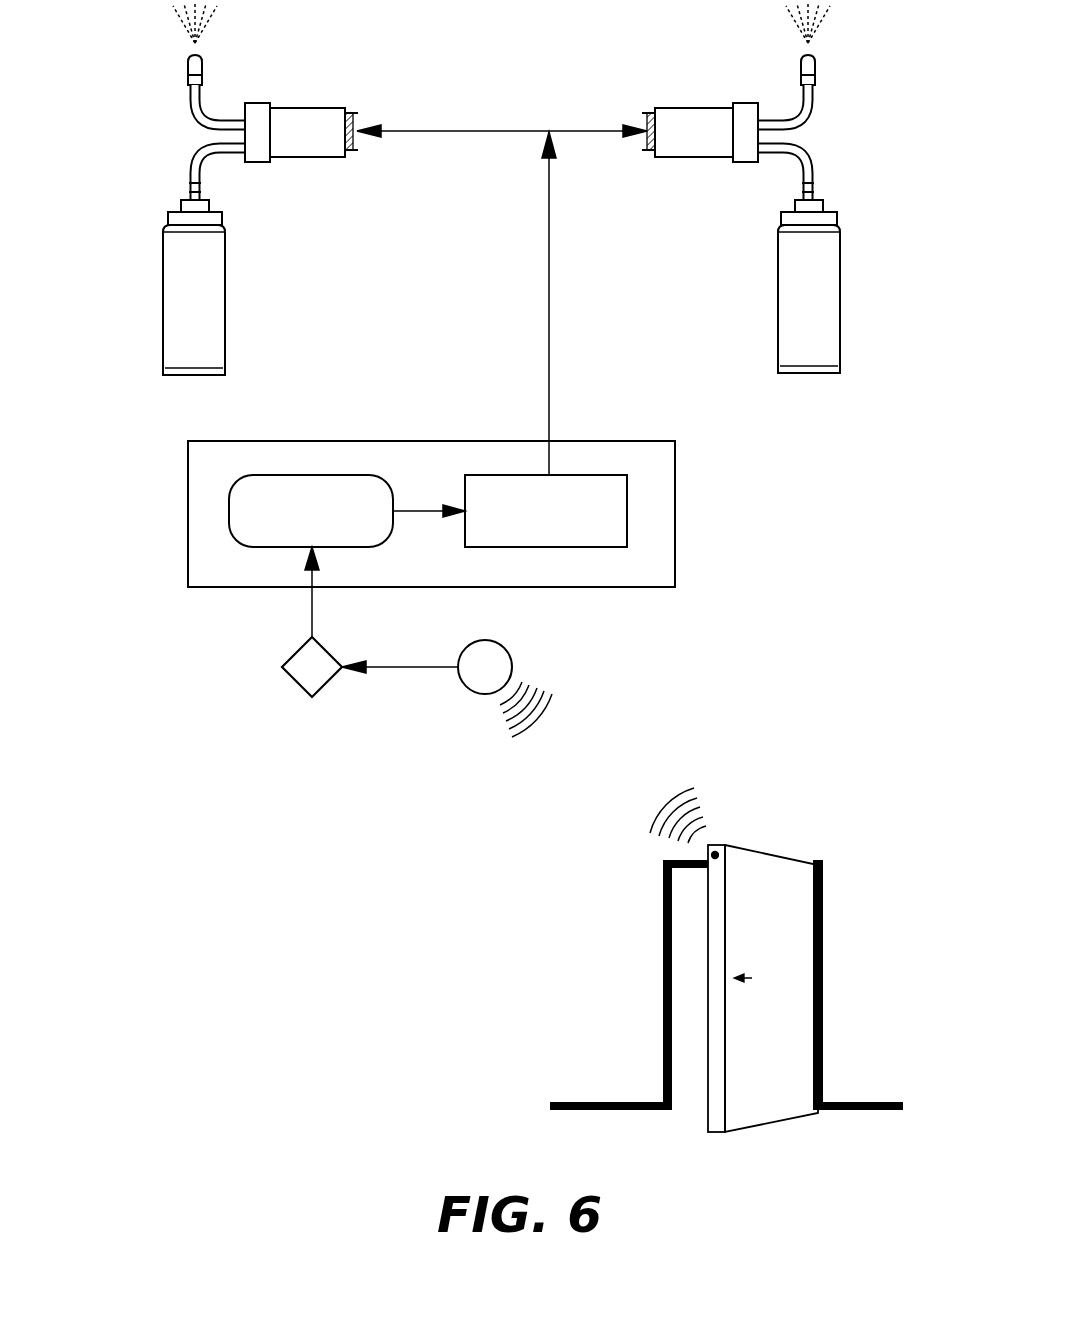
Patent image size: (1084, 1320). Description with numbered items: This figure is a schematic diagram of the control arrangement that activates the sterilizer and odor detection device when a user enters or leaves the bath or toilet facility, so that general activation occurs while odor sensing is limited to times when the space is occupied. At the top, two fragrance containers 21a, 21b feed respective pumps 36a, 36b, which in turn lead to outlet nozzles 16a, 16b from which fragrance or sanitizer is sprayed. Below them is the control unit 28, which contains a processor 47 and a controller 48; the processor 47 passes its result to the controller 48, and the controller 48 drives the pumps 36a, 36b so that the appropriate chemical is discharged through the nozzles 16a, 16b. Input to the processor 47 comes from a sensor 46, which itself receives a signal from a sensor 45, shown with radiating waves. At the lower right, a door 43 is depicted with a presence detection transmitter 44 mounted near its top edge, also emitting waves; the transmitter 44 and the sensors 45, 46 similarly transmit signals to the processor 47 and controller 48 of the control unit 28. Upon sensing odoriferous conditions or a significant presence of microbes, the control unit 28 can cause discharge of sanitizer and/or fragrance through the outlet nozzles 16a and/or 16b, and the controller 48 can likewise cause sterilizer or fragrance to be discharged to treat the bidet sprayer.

The outlet nozzle 16a is at (815, 68).
The outlet nozzle 16b is at (185, 68).
The fragrance container 21a is at (802, 312).
The fragrance container 21b is at (205, 312).
The pump 36a is at (690, 147).
The pump 36b is at (318, 147).
The control unit 28 is at (434, 539).
The processor 47 is at (245, 508).
The controller 48 is at (613, 508).
The sensor 46 is at (293, 680).
The sensor 45 is at (478, 681).
The presence detection transmitter 44 is at (718, 848).
The door 43 is at (760, 1105).